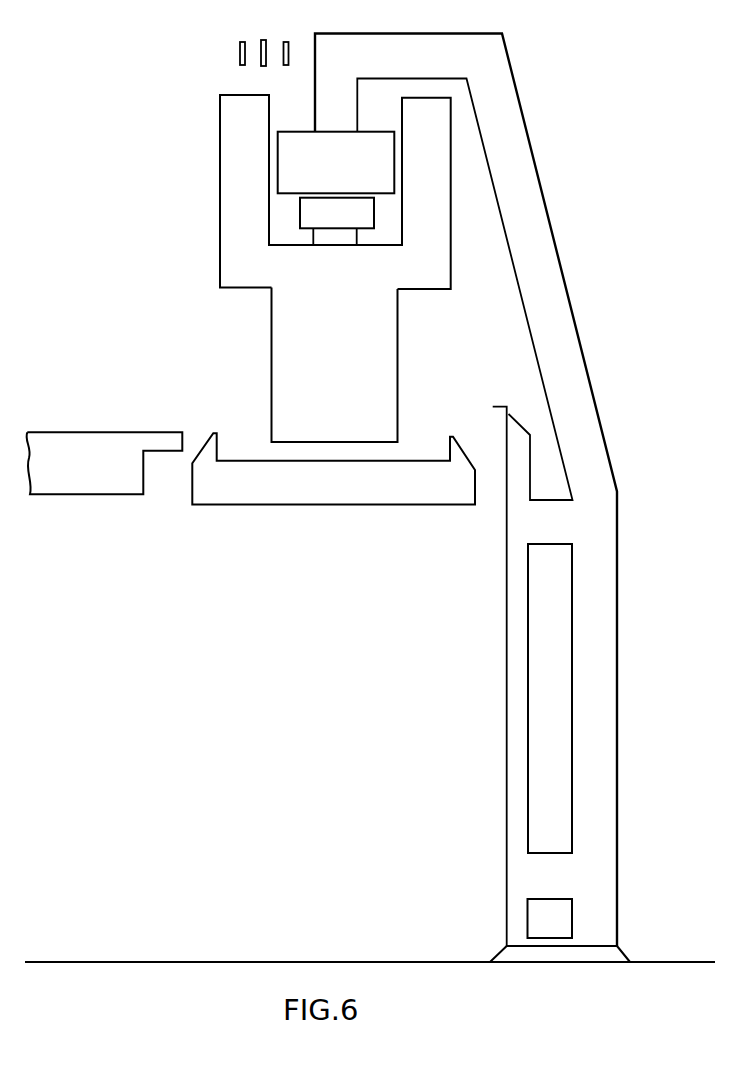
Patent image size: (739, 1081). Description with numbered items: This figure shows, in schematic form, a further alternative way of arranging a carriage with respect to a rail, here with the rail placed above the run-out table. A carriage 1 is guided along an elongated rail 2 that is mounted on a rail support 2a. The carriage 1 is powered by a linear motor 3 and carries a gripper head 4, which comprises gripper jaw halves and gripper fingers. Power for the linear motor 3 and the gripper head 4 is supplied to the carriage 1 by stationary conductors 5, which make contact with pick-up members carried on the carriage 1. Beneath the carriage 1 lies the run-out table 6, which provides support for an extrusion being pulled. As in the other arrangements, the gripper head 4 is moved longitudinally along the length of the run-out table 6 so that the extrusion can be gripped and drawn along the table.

The carriage 1 is at (442, 232).
The rail 2 is at (336, 163).
The rail support 2a is at (607, 748).
The linear motor 3 is at (337, 221).
The gripper head 4 is at (335, 365).
The stationary conductors 5 is at (286, 42).
The run-out table 6 is at (333, 468).